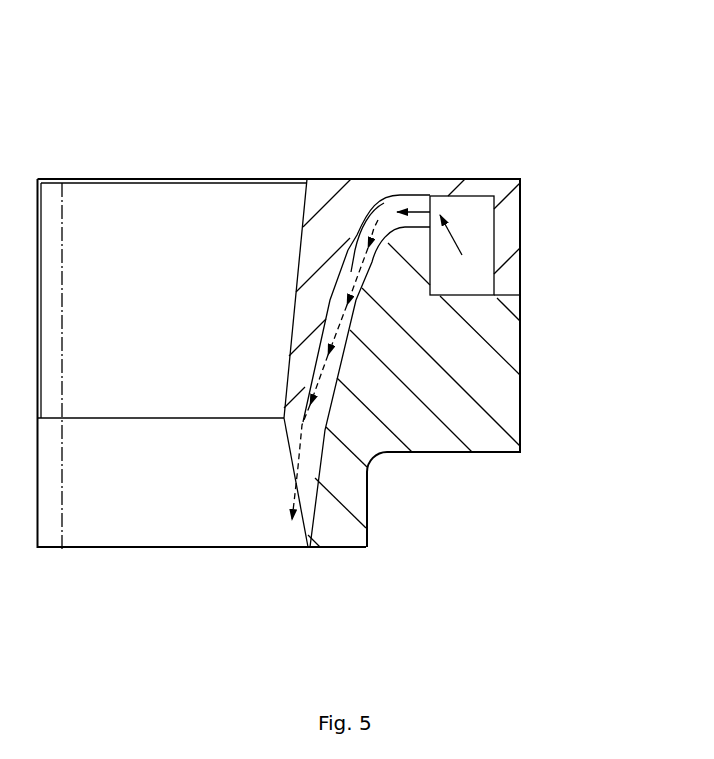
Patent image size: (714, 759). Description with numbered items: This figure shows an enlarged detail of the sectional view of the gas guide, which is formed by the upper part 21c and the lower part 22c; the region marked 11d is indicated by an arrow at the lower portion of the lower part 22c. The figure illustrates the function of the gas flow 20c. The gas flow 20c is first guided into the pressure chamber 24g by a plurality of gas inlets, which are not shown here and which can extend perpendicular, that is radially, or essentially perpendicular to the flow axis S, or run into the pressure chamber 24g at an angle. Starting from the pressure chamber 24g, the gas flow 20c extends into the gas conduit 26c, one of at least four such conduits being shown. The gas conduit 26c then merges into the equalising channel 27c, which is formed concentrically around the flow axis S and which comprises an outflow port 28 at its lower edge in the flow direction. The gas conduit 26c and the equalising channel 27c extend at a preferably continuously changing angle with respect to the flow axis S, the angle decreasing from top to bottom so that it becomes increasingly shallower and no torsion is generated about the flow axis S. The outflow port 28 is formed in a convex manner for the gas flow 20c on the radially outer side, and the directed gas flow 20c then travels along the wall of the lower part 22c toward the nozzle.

The lower part 22c is at (413, 352).
The pressure chamber 24g is at (462, 255).
The upper part 21c is at (320, 243).
The gas conduit 26c is at (378, 220).
The gas flow 20c is at (317, 386).
The equalising channel 27c is at (332, 323).
The outflow port 28 is at (302, 422).
The flow axis S is at (62, 473).
The housing component 11d is at (455, 490).